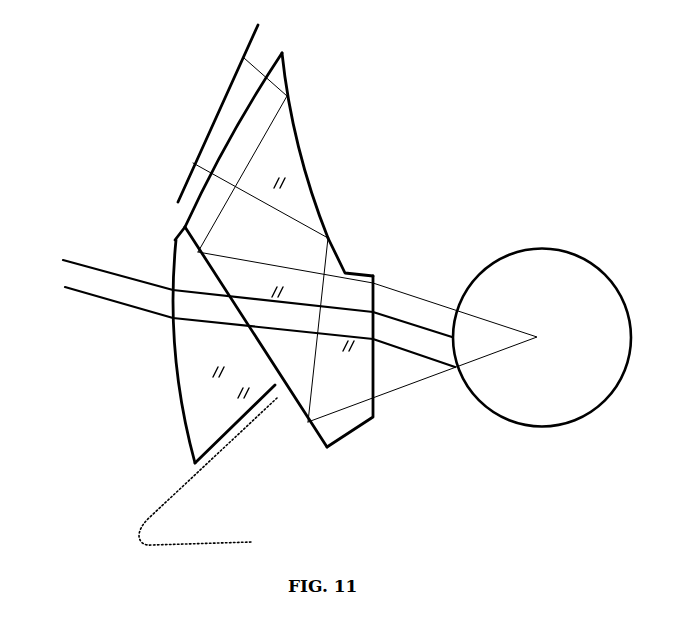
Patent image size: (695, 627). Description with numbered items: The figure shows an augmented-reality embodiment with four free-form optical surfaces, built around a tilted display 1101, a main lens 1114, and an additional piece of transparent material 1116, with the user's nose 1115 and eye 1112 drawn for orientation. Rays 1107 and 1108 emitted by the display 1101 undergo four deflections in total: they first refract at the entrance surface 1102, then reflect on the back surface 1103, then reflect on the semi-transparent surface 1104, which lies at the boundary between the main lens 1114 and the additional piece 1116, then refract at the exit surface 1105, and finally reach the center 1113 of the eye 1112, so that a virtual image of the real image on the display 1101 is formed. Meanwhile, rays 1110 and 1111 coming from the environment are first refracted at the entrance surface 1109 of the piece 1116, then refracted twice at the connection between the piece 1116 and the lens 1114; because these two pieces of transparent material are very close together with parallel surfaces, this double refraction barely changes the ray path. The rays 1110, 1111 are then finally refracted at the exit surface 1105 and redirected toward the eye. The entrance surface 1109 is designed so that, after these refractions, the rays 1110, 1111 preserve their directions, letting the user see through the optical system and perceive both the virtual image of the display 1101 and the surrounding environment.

The tilted display 1101 is at (258, 25).
The entrance surface 1102 is at (188, 212).
The back surface 1103 is at (298, 135).
The semi-transparent surface 1104 is at (203, 270).
The exit surface 1105 is at (377, 368).
The ray 1107 is at (196, 166).
The ray 1108 is at (258, 55).
The entrance surface 1109 is at (180, 423).
The ray 1110 is at (83, 300).
The ray 1111 is at (87, 260).
The eye 1112 is at (573, 253).
The center of eye 1113 is at (537, 337).
The lens 1114 is at (297, 372).
The nose 1115 is at (147, 513).
The additional piece of transparent material 1116 is at (213, 348).